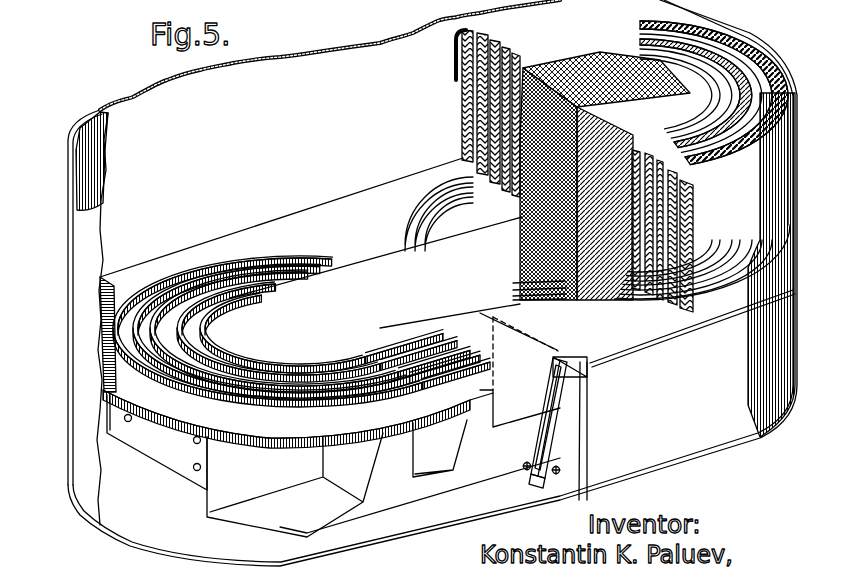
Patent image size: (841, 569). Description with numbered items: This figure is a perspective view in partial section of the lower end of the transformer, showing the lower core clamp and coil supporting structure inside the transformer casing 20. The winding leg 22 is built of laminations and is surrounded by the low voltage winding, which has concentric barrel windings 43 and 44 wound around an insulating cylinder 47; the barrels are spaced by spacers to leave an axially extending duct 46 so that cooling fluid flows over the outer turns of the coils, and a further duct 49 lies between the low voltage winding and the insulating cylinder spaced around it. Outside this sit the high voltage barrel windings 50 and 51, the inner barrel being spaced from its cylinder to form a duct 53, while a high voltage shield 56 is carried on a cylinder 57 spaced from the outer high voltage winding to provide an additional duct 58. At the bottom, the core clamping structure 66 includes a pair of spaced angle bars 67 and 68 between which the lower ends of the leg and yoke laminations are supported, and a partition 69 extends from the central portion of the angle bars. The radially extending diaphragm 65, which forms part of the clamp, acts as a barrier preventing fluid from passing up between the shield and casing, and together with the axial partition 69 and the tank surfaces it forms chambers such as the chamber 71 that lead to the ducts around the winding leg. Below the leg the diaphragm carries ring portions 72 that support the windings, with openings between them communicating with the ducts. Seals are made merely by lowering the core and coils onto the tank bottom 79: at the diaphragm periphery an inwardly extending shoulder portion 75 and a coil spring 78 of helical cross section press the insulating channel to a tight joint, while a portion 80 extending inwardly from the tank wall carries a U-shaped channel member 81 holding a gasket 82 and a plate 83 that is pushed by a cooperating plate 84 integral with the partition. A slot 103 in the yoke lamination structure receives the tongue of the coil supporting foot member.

The transformer casing 20 is at (120, 98).
The winding leg 22 is at (520, 250).
The concentric barrel winding of low voltage winding 43 is at (520, 104).
The concentric barrel winding of low voltage winding 44 is at (507, 144).
The axially extending duct 46 is at (652, 273).
The insulating cylinder 47 is at (597, 265).
The duct 49 is at (643, 273).
The high voltage barrel winding 50 is at (717, 63).
The high voltage barrel winding 51 is at (737, 90).
The duct 53 is at (677, 300).
The high voltage shield 56 is at (697, 223).
The cylinder 57 is at (700, 303).
The axially extending duct 58 is at (693, 290).
The barrier or diaphragm 65 is at (478, 390).
The core clamping structure 66 is at (163, 457).
The angle bar 67 is at (213, 500).
The angle bar 68 is at (125, 428).
The partition 69 is at (523, 416).
The chamber 71 is at (395, 543).
The ring portions 72 is at (453, 211).
The shoulder portion 75 is at (582, 387).
The coil spring 78 is at (587, 368).
The tank bottom 79 is at (440, 550).
The cooperating partition portion 80 is at (557, 470).
The channel member 81 is at (552, 446).
The gasket 82 is at (533, 467).
The plate 83 is at (532, 453).
The cooperating plate 84 is at (538, 443).
The slot 103 is at (560, 262).